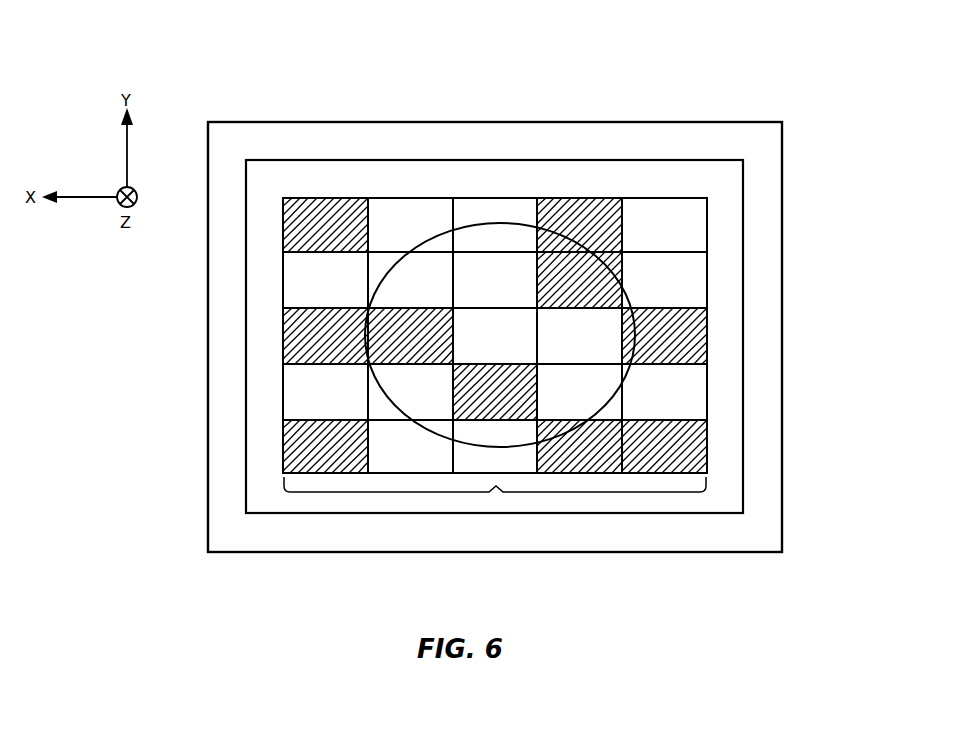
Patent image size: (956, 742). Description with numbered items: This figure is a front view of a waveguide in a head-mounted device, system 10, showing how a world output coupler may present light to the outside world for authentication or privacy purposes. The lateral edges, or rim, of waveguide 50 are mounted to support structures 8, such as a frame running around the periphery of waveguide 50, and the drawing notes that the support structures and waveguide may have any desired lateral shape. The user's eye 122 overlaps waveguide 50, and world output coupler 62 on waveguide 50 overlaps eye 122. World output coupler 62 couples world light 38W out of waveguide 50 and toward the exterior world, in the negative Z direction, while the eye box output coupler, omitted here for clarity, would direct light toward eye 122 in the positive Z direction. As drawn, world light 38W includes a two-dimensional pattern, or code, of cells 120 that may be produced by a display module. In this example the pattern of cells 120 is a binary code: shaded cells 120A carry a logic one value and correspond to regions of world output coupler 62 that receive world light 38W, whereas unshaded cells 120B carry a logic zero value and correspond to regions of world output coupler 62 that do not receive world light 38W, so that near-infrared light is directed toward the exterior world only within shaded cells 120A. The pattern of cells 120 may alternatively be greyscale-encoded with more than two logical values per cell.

The system 10 is at (528, 308).
The support structure 8 is at (772, 195).
The waveguide 50 is at (733, 261).
The world output coupler 62 is at (728, 174).
The cells 120 is at (566, 294).
The shaded cells 120A is at (688, 330).
The unshaded cells 120B is at (687, 395).
The eye 122 is at (498, 223).
The world light 38W is at (496, 489).